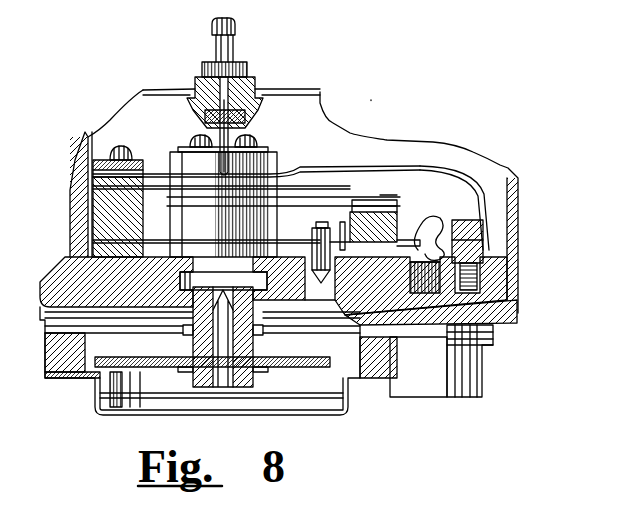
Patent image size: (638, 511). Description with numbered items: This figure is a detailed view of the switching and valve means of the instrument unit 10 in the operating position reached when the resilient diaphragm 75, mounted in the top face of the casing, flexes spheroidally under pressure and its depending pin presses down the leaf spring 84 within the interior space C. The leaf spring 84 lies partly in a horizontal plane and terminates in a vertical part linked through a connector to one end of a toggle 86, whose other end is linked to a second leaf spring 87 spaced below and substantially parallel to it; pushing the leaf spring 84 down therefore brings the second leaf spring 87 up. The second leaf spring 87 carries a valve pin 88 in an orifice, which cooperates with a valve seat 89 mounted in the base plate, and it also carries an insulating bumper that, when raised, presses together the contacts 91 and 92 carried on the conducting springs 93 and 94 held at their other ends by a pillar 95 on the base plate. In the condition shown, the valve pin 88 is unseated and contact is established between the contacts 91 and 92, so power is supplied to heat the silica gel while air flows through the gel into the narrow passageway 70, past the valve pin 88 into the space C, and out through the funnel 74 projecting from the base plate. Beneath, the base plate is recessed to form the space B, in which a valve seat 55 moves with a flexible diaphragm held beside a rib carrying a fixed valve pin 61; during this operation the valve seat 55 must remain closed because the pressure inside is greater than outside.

The unit 10 is at (371, 100).
The interior space C is at (150, 107).
The resilient diaphragm 75 is at (273, 97).
The pillar 95 is at (172, 157).
The second leaf spring 87 is at (100, 227).
The conducting spring 93 is at (320, 178).
The conducting spring 94 is at (305, 204).
The leaf spring 84 is at (470, 177).
The contact 91 is at (352, 175).
The contact 92 is at (400, 193).
The toggle 86 is at (438, 212).
The valve pin 88 is at (342, 243).
The valve seat 89 is at (352, 284).
The passageway 70 is at (517, 318).
The space B is at (190, 280).
The valve seat 55 is at (255, 345).
The valve pin 61 is at (207, 368).
The funnel 74 is at (457, 372).